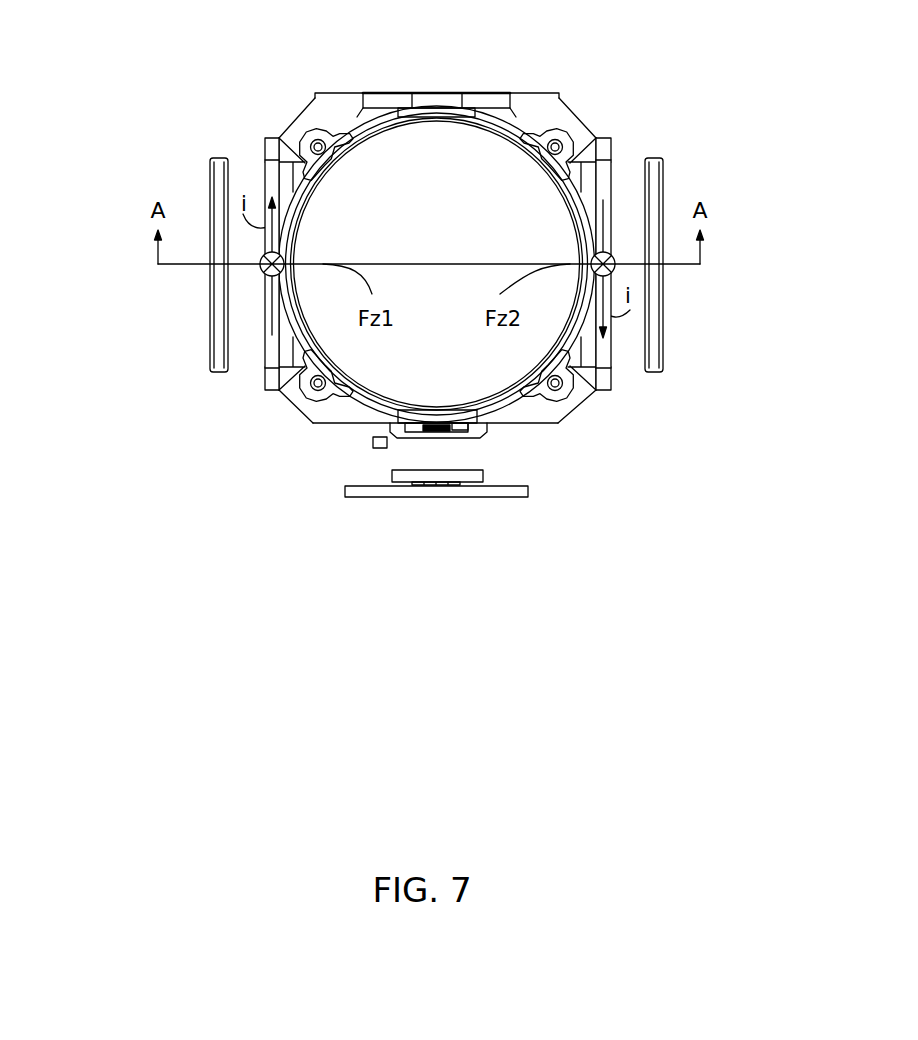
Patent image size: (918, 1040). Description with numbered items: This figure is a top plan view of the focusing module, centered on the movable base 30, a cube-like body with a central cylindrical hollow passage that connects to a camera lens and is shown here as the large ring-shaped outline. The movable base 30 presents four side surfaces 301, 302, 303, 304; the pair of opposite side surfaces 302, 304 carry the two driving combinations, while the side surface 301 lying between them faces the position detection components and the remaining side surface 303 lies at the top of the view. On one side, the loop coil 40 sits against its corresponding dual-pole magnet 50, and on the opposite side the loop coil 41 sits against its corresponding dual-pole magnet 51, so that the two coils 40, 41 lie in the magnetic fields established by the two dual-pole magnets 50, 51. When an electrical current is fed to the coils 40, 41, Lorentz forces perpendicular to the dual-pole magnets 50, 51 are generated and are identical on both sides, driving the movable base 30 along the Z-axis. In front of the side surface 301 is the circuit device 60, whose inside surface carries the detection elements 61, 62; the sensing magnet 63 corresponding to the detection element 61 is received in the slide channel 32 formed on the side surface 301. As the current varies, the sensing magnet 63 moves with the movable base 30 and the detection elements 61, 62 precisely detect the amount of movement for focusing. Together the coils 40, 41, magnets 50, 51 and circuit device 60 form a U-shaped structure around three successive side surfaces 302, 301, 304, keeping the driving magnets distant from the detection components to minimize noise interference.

The movable base 30 is at (338, 117).
The side surface 303 is at (450, 73).
The side surface 301 is at (550, 447).
The side surface 302 is at (626, 388).
The side surface 304 is at (245, 383).
The loop coil 41 is at (272, 390).
The loop coil 40 is at (603, 390).
The dual-pole magnet 51 is at (210, 183).
The dual-pole magnet 50 is at (663, 188).
The sensing magnet 63 is at (435, 424).
The slide channel 32 is at (463, 424).
The detection element 62 is at (373, 442).
The detection element 61 is at (392, 471).
The circuit device 60 is at (390, 496).